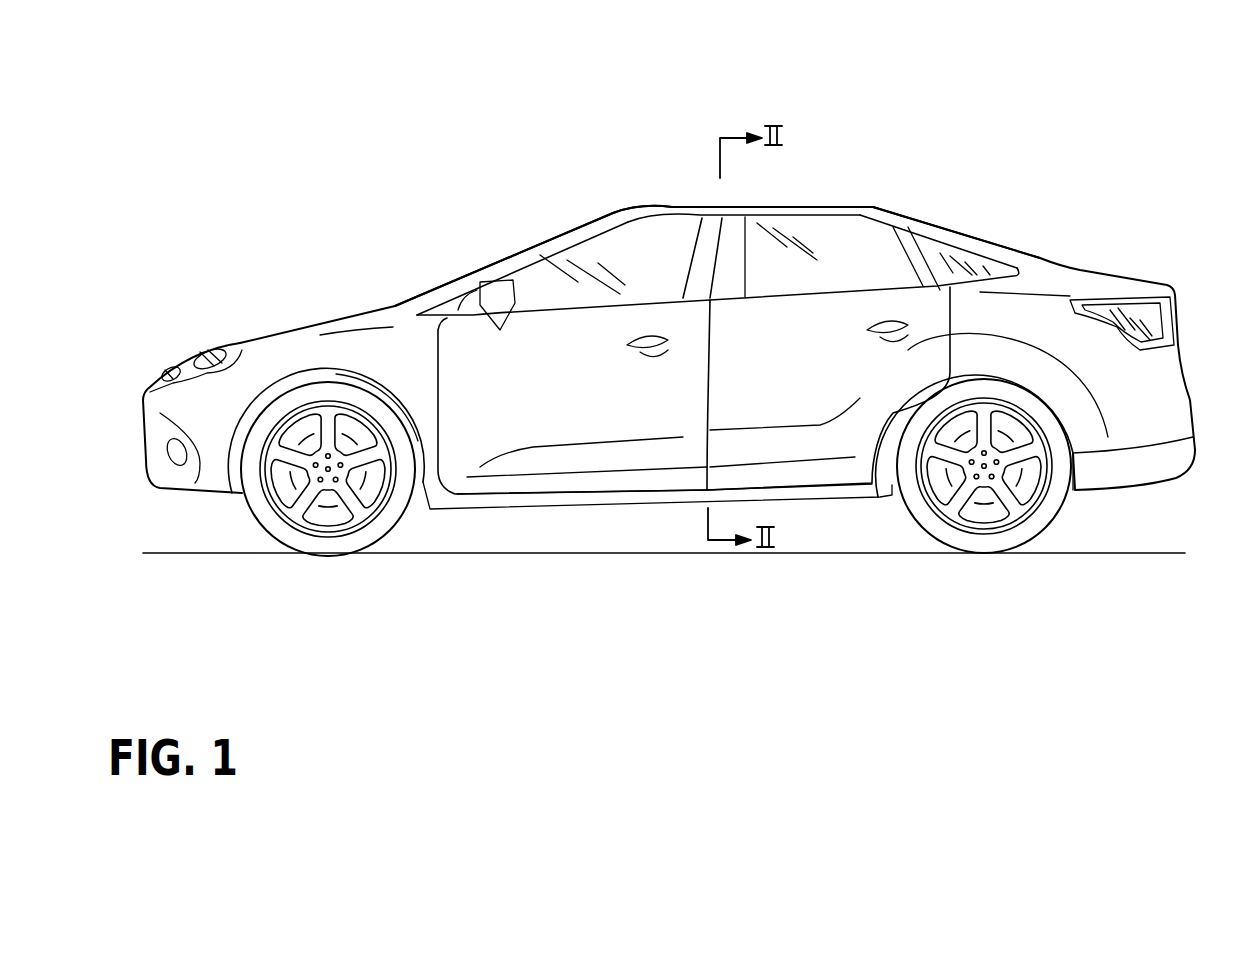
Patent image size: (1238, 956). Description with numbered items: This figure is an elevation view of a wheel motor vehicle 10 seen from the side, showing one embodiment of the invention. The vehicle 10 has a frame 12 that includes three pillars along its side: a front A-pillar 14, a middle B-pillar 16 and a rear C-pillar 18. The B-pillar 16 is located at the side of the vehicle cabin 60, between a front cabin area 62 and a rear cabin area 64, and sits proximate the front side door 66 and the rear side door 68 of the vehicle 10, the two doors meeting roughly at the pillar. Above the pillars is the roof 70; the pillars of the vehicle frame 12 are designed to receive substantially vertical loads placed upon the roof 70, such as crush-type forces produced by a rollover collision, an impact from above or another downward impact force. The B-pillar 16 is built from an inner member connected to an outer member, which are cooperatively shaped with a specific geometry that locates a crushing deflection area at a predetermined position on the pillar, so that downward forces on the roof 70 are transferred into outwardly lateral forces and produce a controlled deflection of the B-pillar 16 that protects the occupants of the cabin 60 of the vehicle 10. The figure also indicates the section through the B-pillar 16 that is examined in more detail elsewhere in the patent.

The wheel motor vehicle 10 is at (1112, 188).
The frame 12 is at (873, 210).
The front A-pillar 14 is at (530, 243).
The middle B-pillar 16 is at (717, 243).
The rear C-pillar 18 is at (958, 232).
The vehicle cabin 60 is at (613, 247).
The front cabin area 62 is at (532, 433).
The rear cabin area 64 is at (875, 493).
The front side door 66 is at (460, 352).
The rear side door 68 is at (808, 408).
The roof 70 is at (672, 207).